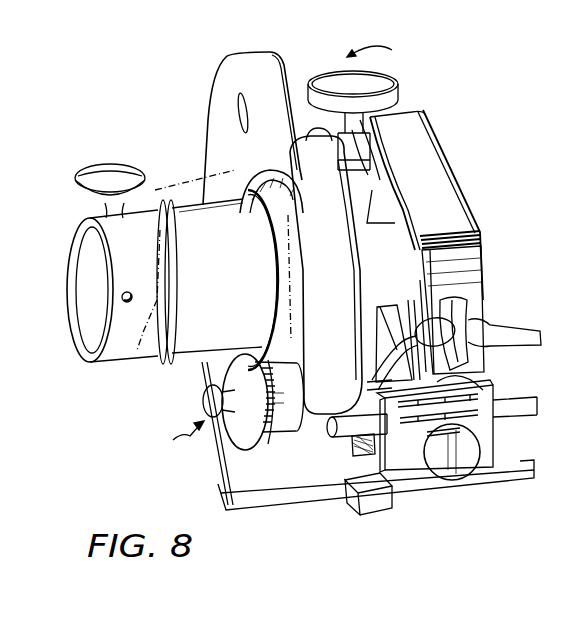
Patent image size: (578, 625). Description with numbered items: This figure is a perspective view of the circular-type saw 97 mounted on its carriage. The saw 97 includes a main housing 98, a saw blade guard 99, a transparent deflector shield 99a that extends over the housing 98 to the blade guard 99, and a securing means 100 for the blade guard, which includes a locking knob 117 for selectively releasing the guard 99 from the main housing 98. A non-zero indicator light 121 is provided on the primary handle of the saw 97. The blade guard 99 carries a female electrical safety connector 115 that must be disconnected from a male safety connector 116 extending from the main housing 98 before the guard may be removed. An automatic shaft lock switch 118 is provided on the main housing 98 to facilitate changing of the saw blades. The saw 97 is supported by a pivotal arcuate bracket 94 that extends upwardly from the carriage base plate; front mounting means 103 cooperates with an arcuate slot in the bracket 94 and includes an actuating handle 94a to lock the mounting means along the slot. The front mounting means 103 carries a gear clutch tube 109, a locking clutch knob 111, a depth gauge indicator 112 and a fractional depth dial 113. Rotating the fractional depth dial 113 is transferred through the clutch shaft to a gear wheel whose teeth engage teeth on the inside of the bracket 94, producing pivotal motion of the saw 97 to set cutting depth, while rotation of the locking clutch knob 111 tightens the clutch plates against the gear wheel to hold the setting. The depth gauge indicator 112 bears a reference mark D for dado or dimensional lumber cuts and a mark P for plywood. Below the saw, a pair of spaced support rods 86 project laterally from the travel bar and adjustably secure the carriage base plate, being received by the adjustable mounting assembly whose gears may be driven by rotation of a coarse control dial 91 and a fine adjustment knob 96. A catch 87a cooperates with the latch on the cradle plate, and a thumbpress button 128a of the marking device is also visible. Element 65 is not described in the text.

The base plate 65 is at (263, 483).
The support rods 86 is at (522, 407).
The catch 87a is at (382, 512).
The coarse control dial 91 is at (460, 470).
The pivotal arcuate bracket 94 is at (410, 283).
The actuating handle 94a is at (435, 426).
The fine adjustment knob 96 is at (363, 454).
The circular-type saw 97 is at (392, 54).
The main housing 98 is at (221, 257).
The saw blade guard 99 is at (430, 177).
The deflector shield 99a is at (140, 352).
The securing means 100 is at (427, 113).
The front mounting means 103 is at (169, 437).
The gear clutch tube 109 is at (363, 372).
The locking clutch knob 111 is at (204, 398).
The depth gauge indicator 112 is at (277, 434).
The fractional depth dial 113 is at (233, 440).
The female electrical safety connector 115 is at (457, 310).
The male safety connector 116 is at (437, 335).
The locking knob 117 is at (383, 82).
The automatic shaft lock switch 118 is at (133, 293).
The non-zero indicator light 121 is at (324, 136).
The thumbpress button 128a is at (280, 175).